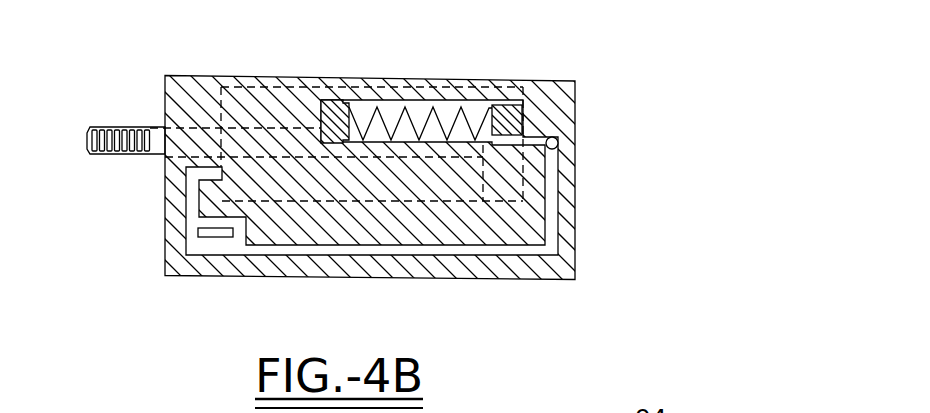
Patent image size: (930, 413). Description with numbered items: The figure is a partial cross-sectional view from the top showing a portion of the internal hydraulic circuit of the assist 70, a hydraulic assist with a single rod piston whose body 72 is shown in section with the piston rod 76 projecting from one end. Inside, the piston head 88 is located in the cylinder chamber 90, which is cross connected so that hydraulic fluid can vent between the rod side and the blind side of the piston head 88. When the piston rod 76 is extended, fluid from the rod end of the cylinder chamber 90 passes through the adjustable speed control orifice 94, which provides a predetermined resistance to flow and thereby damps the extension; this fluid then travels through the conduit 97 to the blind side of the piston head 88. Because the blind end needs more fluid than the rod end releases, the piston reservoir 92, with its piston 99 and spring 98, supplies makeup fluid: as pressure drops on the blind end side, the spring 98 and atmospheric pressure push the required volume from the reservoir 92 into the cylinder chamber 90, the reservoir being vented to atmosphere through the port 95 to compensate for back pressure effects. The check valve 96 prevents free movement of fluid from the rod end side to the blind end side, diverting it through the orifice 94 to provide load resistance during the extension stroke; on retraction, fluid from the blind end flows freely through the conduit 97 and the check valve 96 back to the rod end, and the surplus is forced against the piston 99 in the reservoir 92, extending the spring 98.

The assist 70 is at (550, 71).
The housing 72 is at (576, 98).
The piston rod 76 is at (130, 127).
The piston head 88 is at (560, 177).
The cylinder chamber 90 is at (266, 97).
The piston reservoir 92 is at (444, 106).
The adjustable speed control orifice 94 is at (215, 252).
The port 95 is at (558, 143).
The check valve 96 is at (213, 227).
The conduit 97 is at (367, 252).
The spring 98 is at (426, 108).
The piston 99 is at (333, 100).